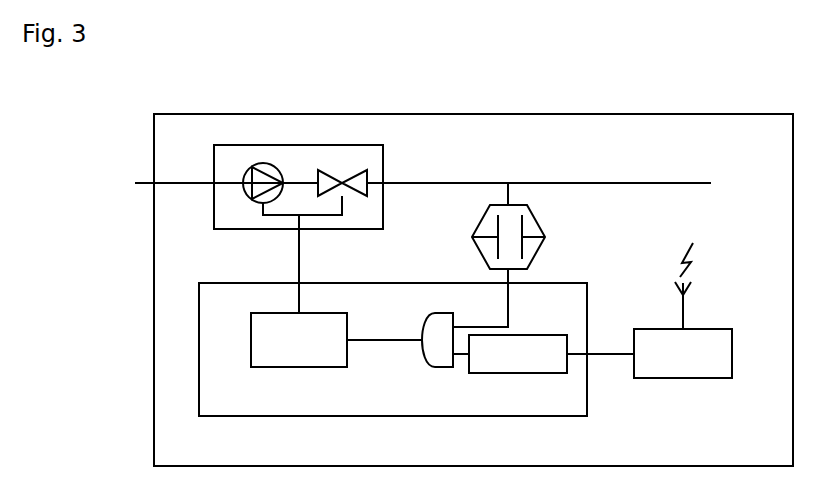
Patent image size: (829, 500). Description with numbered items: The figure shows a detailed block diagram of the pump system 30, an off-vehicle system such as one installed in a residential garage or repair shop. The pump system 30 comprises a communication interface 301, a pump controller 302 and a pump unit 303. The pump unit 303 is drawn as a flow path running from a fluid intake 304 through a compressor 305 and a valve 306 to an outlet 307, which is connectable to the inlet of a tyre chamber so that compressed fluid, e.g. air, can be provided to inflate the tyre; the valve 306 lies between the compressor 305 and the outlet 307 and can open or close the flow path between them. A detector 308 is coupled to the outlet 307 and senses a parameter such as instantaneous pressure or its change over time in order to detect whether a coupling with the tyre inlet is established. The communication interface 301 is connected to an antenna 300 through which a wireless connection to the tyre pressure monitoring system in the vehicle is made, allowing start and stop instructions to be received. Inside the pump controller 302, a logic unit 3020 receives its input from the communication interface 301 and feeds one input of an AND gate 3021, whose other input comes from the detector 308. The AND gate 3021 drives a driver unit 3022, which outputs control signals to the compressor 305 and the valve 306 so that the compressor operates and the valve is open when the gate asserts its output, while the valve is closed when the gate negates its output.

The pump system 30 is at (486, 136).
The antenna 300 is at (683, 310).
The communication interface 301 is at (698, 365).
The pump controller 302 is at (409, 416).
The logic unit 3020 is at (543, 363).
The AND gate 3021 is at (440, 322).
The driver unit 3022 is at (322, 351).
The pump unit 303 is at (313, 150).
The fluid intake 304 is at (142, 180).
The compressor 305 is at (272, 180).
The valve 306 is at (340, 181).
The outlet 307 is at (620, 181).
The detector 308 is at (532, 231).